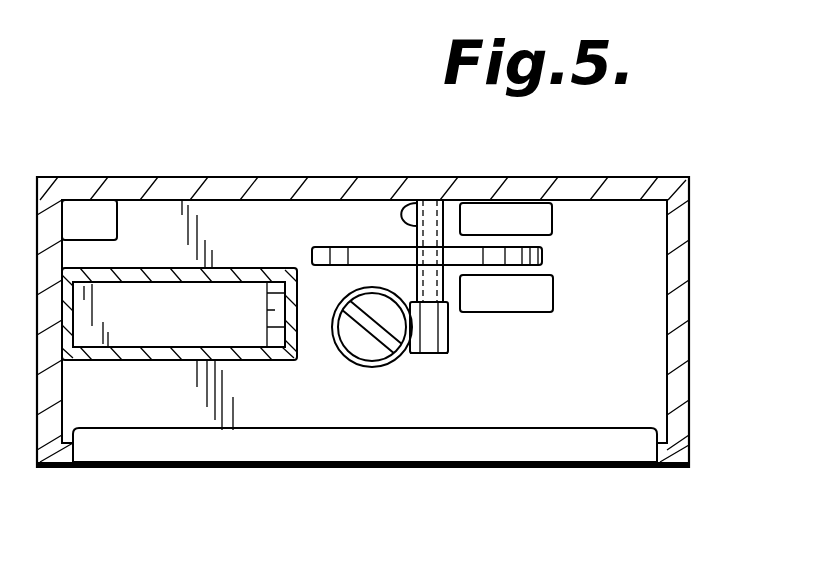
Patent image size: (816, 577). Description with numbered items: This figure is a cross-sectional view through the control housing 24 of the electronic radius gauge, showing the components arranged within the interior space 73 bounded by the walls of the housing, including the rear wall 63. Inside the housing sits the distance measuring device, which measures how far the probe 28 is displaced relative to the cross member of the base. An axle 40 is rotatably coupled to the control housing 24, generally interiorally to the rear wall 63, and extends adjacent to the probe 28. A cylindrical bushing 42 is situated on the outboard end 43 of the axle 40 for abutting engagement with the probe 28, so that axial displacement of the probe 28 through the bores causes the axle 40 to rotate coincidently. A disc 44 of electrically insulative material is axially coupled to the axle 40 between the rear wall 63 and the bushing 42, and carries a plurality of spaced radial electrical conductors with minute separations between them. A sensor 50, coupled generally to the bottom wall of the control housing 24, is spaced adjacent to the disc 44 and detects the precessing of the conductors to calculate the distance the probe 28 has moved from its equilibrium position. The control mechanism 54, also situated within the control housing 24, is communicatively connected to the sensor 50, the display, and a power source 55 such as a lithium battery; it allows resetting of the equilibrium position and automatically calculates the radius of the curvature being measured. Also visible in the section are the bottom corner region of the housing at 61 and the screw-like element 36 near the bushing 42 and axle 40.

The control housing 24 is at (659, 177).
The rear wall 63 is at (280, 177).
The bottom wall of housing 61 is at (668, 467).
The power source 55 is at (85, 217).
The control mechanism 54 is at (163, 270).
The interior space 73 is at (205, 418).
The axle 40 is at (408, 197).
The disc 44 is at (545, 250).
The sensor 50 is at (550, 295).
The cylindrical bushing 42 is at (448, 330).
The outboard end 43 is at (437, 353).
The screw head 36 is at (357, 367).
The probe 28 is at (388, 342).